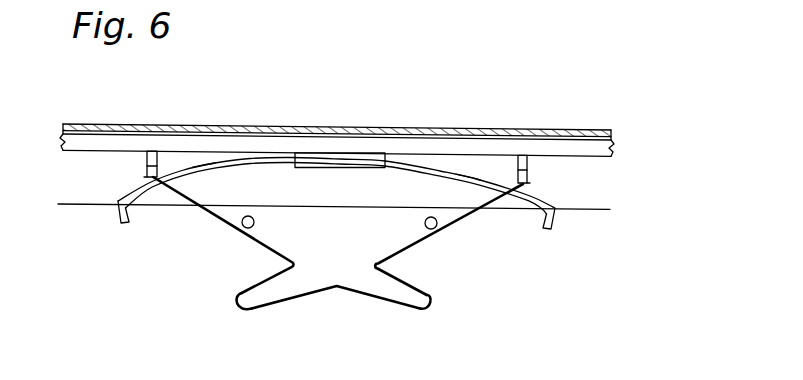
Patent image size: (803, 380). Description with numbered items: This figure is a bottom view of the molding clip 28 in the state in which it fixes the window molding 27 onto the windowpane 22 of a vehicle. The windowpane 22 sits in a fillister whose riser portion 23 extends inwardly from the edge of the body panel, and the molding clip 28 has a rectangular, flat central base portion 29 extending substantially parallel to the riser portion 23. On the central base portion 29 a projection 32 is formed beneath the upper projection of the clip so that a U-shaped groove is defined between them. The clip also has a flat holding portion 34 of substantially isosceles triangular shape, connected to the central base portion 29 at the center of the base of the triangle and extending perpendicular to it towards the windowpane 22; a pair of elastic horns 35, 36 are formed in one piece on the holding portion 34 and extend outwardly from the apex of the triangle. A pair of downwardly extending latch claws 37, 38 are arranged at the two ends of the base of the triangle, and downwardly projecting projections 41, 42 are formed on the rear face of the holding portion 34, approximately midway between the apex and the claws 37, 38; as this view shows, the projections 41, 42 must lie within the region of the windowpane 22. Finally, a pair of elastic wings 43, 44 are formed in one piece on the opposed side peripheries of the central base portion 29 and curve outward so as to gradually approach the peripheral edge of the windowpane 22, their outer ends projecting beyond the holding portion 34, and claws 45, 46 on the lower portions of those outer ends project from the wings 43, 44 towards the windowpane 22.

The windowpane 22 is at (545, 255).
The riser portion 23 is at (441, 130).
The window molding 27 is at (615, 150).
The molding clip 28 is at (338, 271).
The central base portion 29 is at (368, 162).
The projection 32 is at (317, 152).
The holding portion 34 is at (398, 253).
The elastic horn 35 is at (400, 300).
The elastic horn 36 is at (258, 303).
The latch claw 37 is at (528, 172).
The latch claw 38 is at (148, 168).
The projection 41 is at (437, 229).
The projection 42 is at (240, 228).
The elastic wing 43 is at (470, 178).
The elastic wing 44 is at (207, 172).
The claw 45 is at (560, 218).
The claw 46 is at (118, 212).